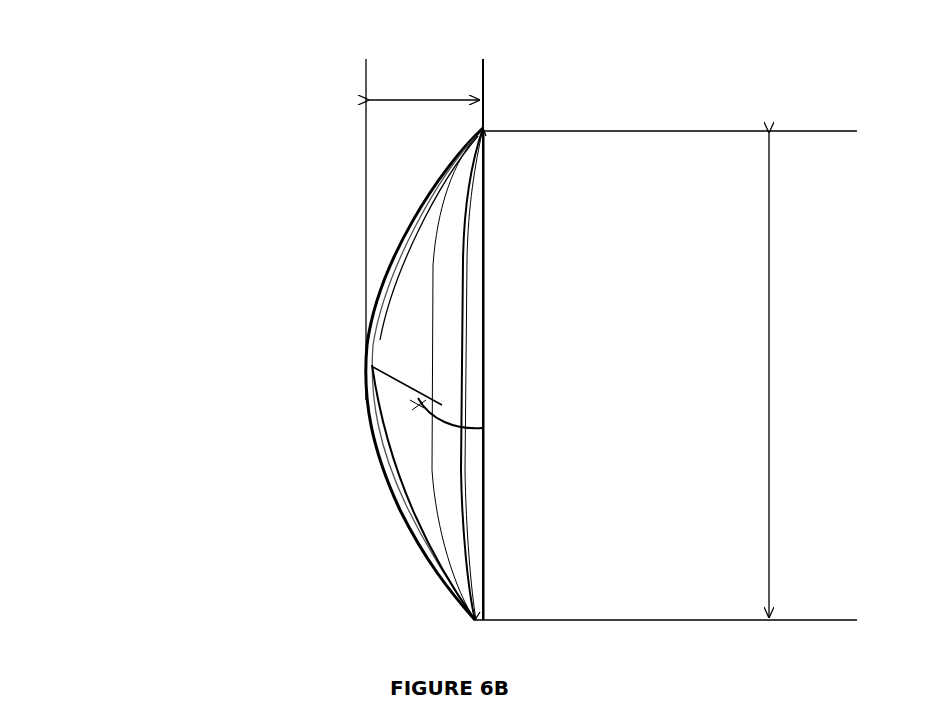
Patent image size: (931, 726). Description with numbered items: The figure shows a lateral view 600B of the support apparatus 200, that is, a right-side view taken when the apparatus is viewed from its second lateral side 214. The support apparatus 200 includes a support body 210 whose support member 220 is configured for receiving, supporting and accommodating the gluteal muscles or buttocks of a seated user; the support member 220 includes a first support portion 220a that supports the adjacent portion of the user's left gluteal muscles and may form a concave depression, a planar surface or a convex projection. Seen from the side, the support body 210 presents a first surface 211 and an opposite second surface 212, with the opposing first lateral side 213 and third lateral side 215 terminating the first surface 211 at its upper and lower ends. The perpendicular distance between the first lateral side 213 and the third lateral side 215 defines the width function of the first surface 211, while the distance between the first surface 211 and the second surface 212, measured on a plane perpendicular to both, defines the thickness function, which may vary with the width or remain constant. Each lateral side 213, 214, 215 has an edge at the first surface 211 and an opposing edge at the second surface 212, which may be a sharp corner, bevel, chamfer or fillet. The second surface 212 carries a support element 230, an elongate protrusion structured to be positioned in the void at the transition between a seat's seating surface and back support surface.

The lateral view 600B is at (40, 124).
The support apparatus 200 is at (405, 310).
The support body 210 is at (366, 332).
The first surface 211 is at (415, 262).
The second surface 212 is at (484, 400).
The first lateral side 213 is at (483, 130).
The second lateral side 214 is at (458, 347).
The third lateral side 215 is at (466, 604).
The support member 220 is at (397, 438).
The first support portion 220a is at (407, 347).
The support element 230 is at (487, 484).